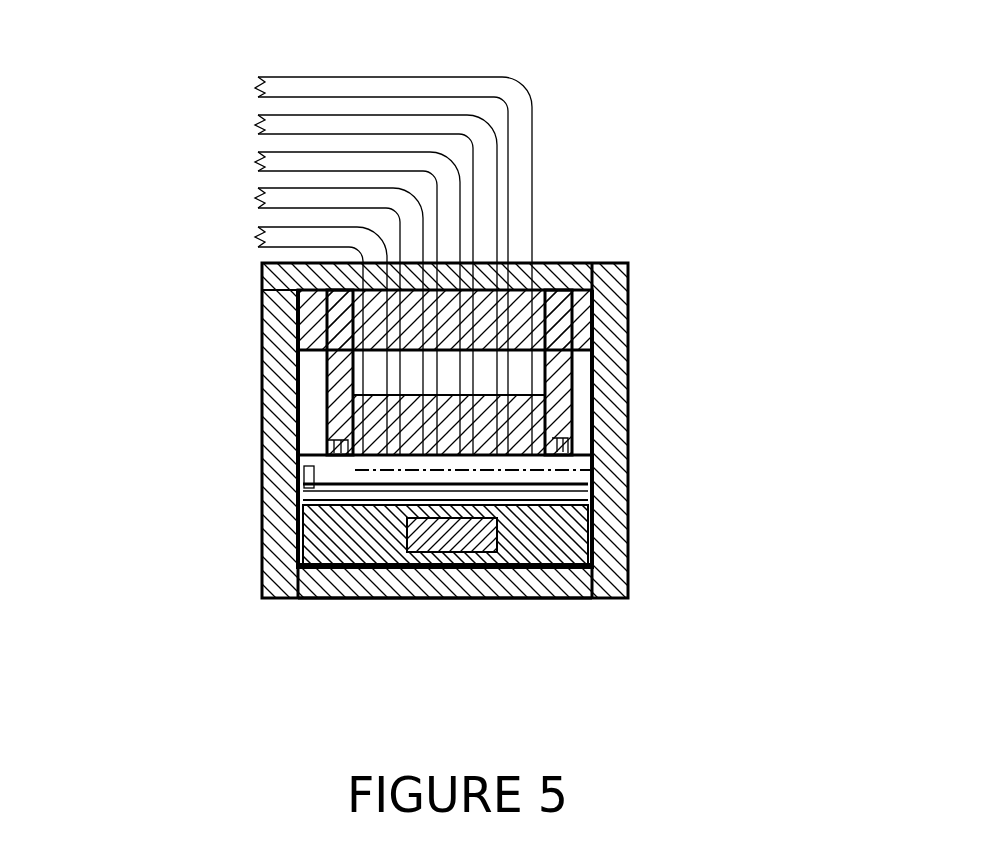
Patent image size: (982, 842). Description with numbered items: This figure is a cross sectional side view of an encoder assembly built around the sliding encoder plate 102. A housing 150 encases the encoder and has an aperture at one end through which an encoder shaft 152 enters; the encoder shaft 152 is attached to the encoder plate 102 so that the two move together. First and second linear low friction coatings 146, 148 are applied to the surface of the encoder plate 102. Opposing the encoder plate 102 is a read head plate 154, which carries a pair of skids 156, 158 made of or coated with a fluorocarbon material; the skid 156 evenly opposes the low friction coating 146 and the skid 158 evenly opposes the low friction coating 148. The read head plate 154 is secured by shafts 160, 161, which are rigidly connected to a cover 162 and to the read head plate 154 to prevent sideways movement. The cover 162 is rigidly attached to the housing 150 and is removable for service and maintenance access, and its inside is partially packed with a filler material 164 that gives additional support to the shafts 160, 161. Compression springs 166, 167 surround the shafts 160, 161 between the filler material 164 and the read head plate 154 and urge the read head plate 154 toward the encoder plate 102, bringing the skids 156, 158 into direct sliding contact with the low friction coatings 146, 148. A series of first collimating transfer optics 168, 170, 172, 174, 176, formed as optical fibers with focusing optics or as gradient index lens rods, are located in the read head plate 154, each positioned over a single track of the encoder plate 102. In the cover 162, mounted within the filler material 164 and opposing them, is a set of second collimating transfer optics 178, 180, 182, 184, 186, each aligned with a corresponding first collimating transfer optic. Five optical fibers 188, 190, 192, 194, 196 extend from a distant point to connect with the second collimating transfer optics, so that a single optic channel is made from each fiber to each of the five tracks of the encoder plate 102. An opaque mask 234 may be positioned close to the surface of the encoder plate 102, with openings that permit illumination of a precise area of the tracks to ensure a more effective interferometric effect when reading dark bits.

The encoder plate 102 is at (607, 550).
The first linear low friction coating 146 is at (375, 570).
The second linear low friction coating 148 is at (606, 482).
The housing 150 is at (620, 598).
The encoder shaft 152 is at (447, 570).
The read head plate 154 is at (582, 423).
The skid 156 is at (305, 500).
The skid 158 is at (570, 460).
The shaft 160 is at (550, 290).
The shaft 161 is at (343, 280).
The cover 162 is at (628, 288).
The filler material 164 is at (628, 315).
The compression spring 166 is at (575, 368).
The compression spring 167 is at (355, 372).
The first collimating transfer optic 168 is at (330, 402).
The first collimating transfer optic 170 is at (330, 445).
The first collimating transfer optic 172 is at (335, 452).
The first collimating transfer optic 174 is at (355, 470).
The first collimating transfer optic 176 is at (330, 490).
The second collimating transfer optic 178 is at (262, 265).
The second collimating transfer optic 180 is at (300, 290).
The second collimating transfer optic 182 is at (330, 315).
The second collimating transfer optic 184 is at (350, 333).
The second collimating transfer optic 186 is at (540, 350).
The optical fiber 188 is at (275, 232).
The optical fiber 190 is at (312, 187).
The optical fiber 192 is at (357, 150).
The optical fiber 194 is at (417, 108).
The optical fiber 196 is at (487, 77).
The opaque mask 234 is at (340, 567).